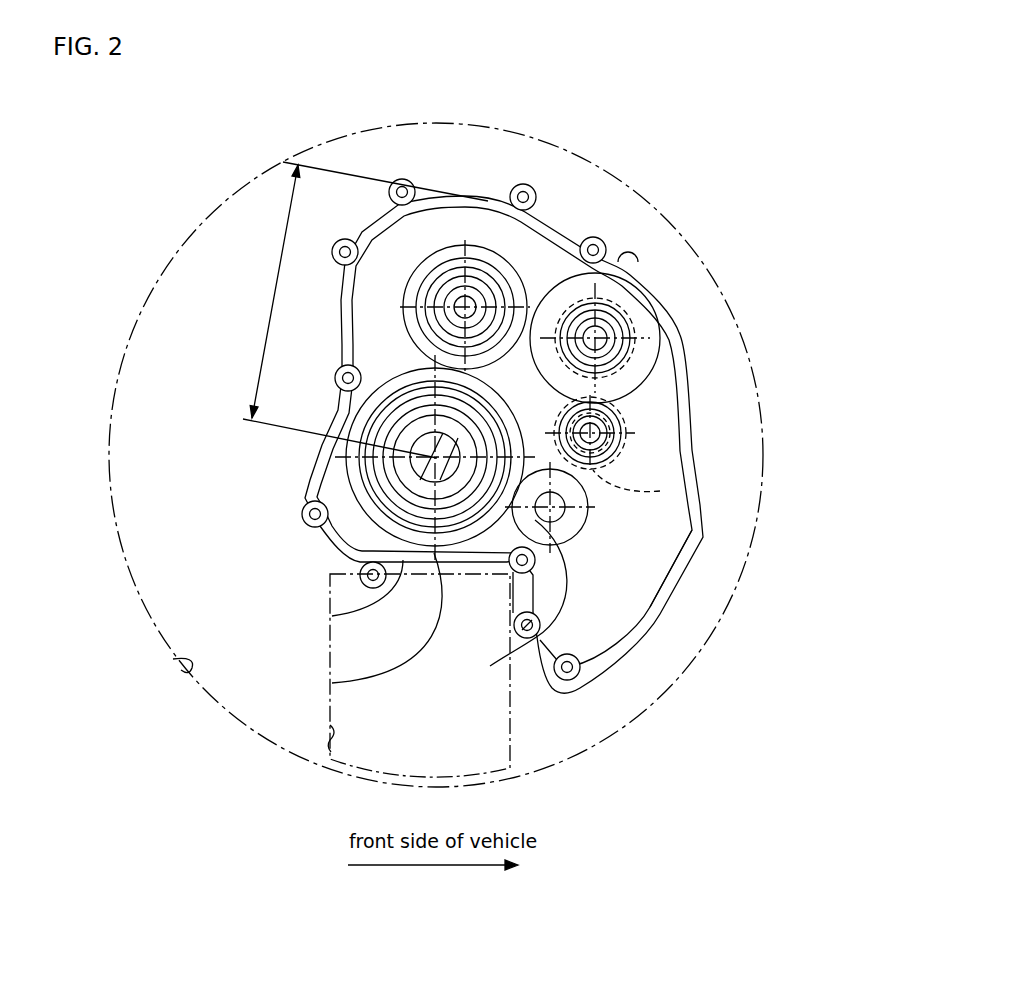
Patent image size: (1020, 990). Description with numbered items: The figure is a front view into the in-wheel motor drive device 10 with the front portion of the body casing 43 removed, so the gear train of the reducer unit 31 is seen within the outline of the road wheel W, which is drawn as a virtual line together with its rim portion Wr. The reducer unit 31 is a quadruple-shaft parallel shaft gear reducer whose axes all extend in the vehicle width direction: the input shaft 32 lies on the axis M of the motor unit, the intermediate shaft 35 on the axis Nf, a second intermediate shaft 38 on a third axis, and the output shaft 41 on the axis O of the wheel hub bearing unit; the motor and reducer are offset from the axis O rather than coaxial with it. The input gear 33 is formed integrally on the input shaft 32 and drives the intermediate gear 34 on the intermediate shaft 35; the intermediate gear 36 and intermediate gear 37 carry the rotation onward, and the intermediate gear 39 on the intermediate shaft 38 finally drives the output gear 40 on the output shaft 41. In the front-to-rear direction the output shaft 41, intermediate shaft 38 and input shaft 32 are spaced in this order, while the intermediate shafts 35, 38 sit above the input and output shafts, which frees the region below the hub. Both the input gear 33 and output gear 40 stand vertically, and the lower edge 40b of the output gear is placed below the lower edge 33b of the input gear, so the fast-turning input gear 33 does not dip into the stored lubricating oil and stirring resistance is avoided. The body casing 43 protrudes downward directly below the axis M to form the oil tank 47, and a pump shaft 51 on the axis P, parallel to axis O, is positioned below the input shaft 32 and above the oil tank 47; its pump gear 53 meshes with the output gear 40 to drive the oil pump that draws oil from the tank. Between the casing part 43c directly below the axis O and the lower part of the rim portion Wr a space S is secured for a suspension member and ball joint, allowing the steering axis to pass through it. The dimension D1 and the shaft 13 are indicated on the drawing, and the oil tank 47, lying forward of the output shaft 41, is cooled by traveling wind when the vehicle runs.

The in-wheel motor drive device 10 is at (585, 214).
The output shaft 13 is at (408, 466).
The reducer unit 31 is at (338, 357).
The input shaft 32 is at (621, 428).
The input gear 33 is at (615, 410).
The lower edge of the input gear 33b is at (660, 491).
The intermediate gear 34 is at (658, 310).
The intermediate shaft 35 is at (632, 352).
The intermediate gear 36 is at (628, 290).
The intermediate gear 37 is at (473, 298).
The intermediate shaft 38 is at (458, 302).
The intermediate gear 39 is at (410, 272).
The output gear 40 is at (380, 430).
The lower edge of the output gear 40b is at (332, 683).
The output shaft 41 is at (383, 442).
The body casing 43 is at (560, 232).
The part directly below the axis O 43c is at (332, 616).
The oil tank 47 is at (582, 633).
The pump shaft 51 is at (513, 664).
The pump gear 53 is at (520, 632).
The distance D1 is at (365, 310).
The axis of the motor unit M is at (592, 434).
The intermediate shaft axis Ni is at (468, 300).
The axis of the intermediate shaft Nf is at (597, 336).
The axis of the output shaft O is at (432, 468).
The axis of the pump shaft P is at (546, 510).
The space S is at (327, 757).
The road wheel W is at (699, 252).
The rim portion Wr is at (172, 661).